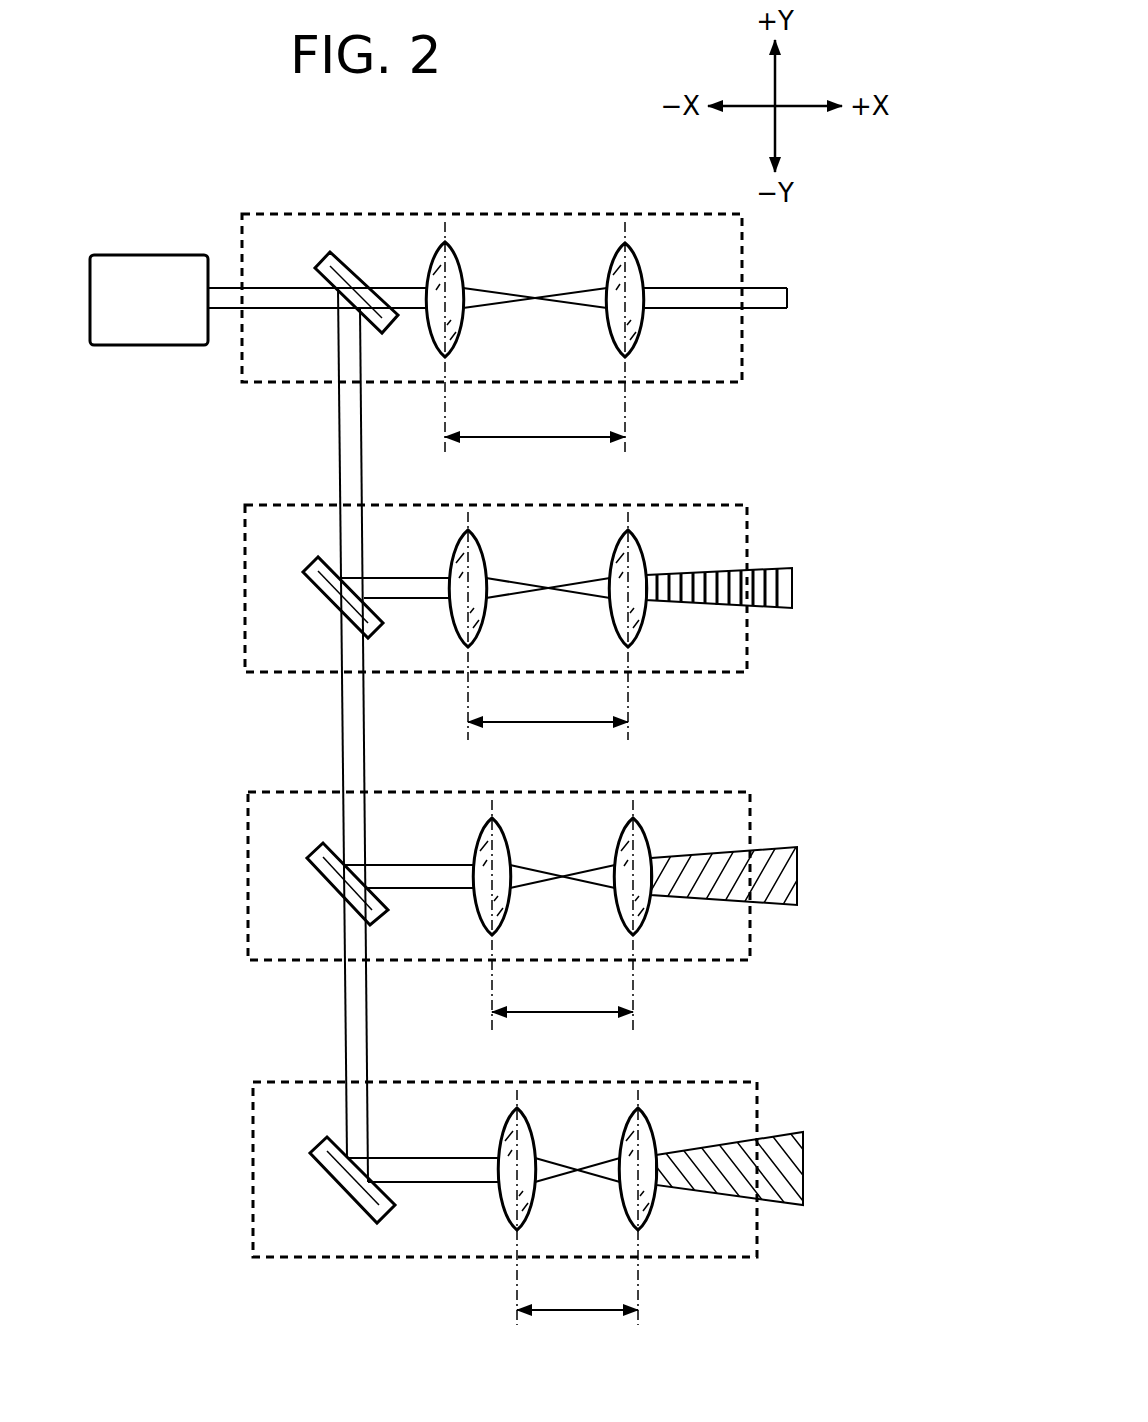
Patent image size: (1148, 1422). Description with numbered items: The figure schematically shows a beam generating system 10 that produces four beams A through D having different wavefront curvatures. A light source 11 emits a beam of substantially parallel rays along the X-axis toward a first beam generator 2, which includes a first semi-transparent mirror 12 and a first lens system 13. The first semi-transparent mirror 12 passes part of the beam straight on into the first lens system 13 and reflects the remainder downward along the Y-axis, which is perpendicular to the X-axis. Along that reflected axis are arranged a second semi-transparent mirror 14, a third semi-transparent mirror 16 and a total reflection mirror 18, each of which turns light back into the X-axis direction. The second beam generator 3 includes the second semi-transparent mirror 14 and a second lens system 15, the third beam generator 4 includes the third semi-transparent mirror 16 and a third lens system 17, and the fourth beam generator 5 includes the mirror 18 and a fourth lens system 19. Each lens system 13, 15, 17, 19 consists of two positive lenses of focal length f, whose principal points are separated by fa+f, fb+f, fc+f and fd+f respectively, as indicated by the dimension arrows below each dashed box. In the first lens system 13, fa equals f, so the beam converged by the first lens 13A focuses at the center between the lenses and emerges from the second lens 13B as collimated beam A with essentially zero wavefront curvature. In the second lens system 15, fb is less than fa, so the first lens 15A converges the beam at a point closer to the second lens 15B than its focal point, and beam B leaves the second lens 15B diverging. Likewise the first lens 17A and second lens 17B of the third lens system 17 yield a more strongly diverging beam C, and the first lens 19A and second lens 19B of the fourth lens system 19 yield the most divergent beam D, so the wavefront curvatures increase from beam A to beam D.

The first beam generator 2 is at (406, 214).
The second beam generator 3 is at (411, 505).
The third beam generator 4 is at (414, 792).
The fourth beam generator 5 is at (419, 1082).
The beam generating system 10 is at (502, 171).
The light source 11 is at (170, 256).
The first semi-transparent mirror 12 is at (327, 262).
The first lens system 13 is at (571, 292).
The first lens 13A is at (460, 270).
The second lens 13B is at (641, 270).
The second semi-transparent mirror 14 is at (327, 578).
The second lens system 15 is at (530, 581).
The first lens 15A is at (483, 558).
The second lens 15B is at (644, 558).
The third semi-transparent mirror 16 is at (334, 862).
The third lens system 17 is at (548, 869).
The first lens 17A is at (506, 846).
The second lens 17B is at (648, 846).
The mirror 18 is at (337, 1154).
The fourth lens system 19 is at (566, 1161).
The first lens 19A is at (531, 1136).
The second lens 19B is at (654, 1136).